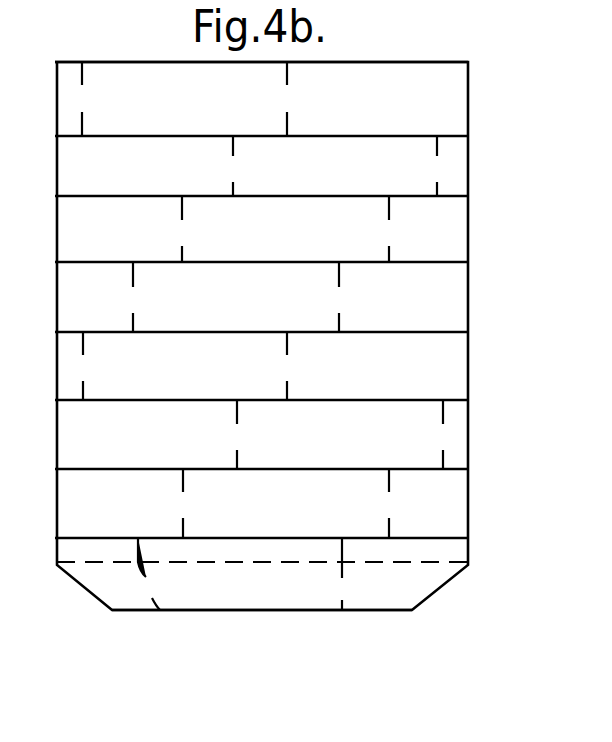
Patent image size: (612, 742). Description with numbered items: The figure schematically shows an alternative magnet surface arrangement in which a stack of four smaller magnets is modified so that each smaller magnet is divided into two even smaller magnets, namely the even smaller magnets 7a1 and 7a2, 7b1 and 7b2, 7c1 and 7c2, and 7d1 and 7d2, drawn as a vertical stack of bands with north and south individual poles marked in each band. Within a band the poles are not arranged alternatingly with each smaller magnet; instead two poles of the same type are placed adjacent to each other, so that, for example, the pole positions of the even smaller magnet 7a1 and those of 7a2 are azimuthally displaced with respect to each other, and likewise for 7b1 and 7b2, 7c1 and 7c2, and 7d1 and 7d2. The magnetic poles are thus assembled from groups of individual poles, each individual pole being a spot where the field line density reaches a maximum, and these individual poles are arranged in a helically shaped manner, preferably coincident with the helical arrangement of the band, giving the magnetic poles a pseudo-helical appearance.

The even smaller magnet 7a1 is at (455, 92).
The even smaller magnet 7a2 is at (453, 162).
The even smaller magnet 7b1 is at (455, 220).
The even smaller magnet 7b2 is at (253, 311).
The even smaller magnet 7c1 is at (460, 374).
The even smaller magnet 7c2 is at (460, 416).
The even smaller magnet 7d1 is at (460, 496).
The even smaller magnet 7d2 is at (420, 590).